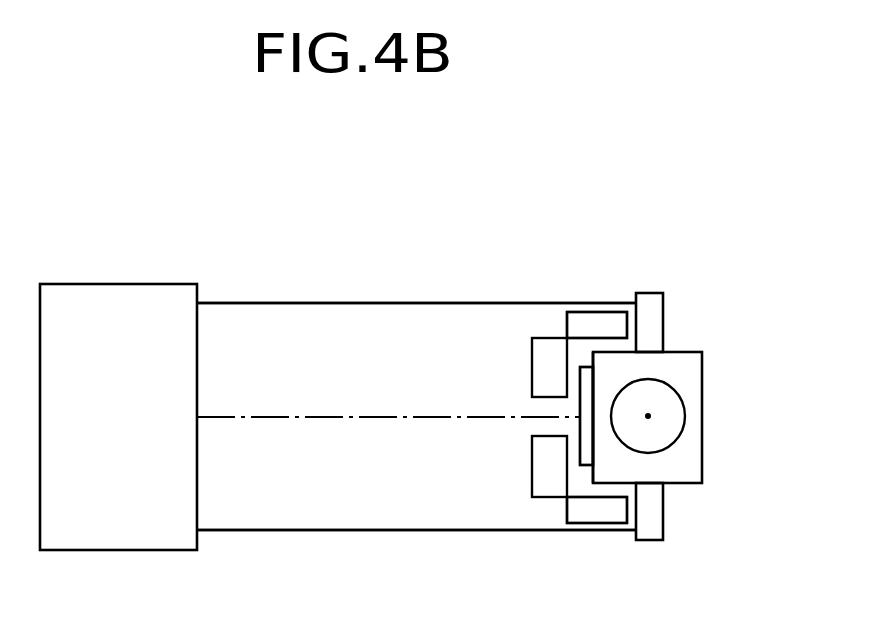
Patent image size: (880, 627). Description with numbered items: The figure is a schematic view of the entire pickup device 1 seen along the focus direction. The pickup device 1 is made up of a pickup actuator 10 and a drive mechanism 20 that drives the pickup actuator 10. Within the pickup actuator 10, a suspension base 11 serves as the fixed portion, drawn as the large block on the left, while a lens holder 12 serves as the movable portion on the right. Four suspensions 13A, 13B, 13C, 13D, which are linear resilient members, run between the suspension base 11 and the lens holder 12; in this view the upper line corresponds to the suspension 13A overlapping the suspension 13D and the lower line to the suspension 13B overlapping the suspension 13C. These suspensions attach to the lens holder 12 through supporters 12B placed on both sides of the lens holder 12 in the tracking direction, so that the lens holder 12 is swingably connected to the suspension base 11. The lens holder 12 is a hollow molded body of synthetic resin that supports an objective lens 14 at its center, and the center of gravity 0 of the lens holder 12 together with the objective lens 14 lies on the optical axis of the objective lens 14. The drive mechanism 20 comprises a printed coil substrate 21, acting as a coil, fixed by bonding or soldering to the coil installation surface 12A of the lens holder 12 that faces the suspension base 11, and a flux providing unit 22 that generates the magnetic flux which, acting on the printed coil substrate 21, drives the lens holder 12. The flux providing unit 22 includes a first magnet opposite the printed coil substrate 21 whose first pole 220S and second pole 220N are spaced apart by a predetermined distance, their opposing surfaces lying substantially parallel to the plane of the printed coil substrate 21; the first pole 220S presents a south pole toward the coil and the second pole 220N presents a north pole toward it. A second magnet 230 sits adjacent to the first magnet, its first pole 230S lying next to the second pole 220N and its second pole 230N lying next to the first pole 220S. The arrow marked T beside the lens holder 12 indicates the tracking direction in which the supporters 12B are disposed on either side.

The pickup device 1 is at (553, 214).
The pickup actuator 10 is at (222, 289).
The suspension base 11 is at (108, 292).
The lens holder 12 is at (680, 362).
The coil installation surface 12A is at (588, 362).
The supporters 12B is at (661, 312).
The suspension 13A is at (382, 303).
The suspension 13B is at (410, 532).
The suspension 13C is at (416, 561).
The suspension 13D is at (416, 281).
The objective lens 14 is at (672, 410).
The center of gravity 0 is at (648, 417).
The drive mechanism 20 is at (578, 298).
The printed coil substrate 21 is at (580, 433).
The flux providing unit 22 is at (521, 383).
The second pole 220N is at (540, 347).
The first pole 220S is at (538, 473).
The second magnet 230 is at (570, 530).
The first pole 230S is at (609, 318).
The second pole 230N is at (603, 513).
The thickness T is at (757, 372).